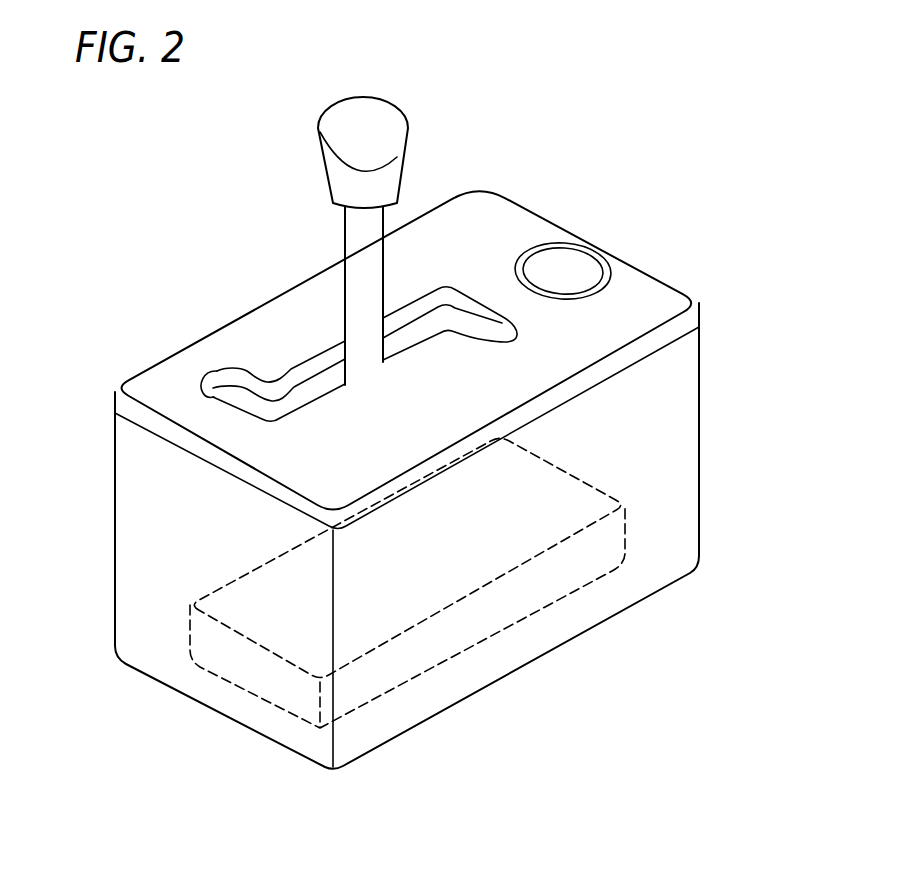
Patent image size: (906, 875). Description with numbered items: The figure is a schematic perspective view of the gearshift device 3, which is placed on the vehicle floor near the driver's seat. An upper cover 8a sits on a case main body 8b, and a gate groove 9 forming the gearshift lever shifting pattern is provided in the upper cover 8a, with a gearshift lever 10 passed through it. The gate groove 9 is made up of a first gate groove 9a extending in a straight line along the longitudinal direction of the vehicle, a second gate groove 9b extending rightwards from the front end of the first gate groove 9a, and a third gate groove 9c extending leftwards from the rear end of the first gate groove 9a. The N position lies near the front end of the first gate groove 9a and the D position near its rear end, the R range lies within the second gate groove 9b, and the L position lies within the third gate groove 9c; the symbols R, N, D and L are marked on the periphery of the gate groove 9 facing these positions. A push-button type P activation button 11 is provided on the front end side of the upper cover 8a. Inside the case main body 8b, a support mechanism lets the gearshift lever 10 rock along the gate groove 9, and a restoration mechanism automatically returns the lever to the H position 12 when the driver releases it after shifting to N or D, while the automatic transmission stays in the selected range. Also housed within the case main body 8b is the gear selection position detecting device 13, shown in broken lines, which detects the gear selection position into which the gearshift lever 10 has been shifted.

The gearshift device 3 is at (317, 241).
The gearshift lever 10 is at (360, 243).
The gate groove 9 is at (348, 271).
The first gate groove 9a is at (284, 381).
The second gate groove 9b is at (504, 318).
The third gate groove 9c is at (213, 395).
The P activation button 11 is at (585, 264).
The H position 12 is at (340, 343).
The upper cover 8a is at (407, 357).
The case main body 8b is at (688, 385).
The gear selection position detecting device 13 is at (598, 486).